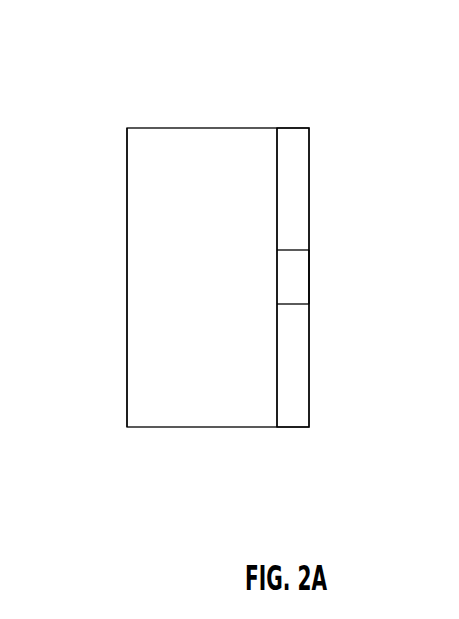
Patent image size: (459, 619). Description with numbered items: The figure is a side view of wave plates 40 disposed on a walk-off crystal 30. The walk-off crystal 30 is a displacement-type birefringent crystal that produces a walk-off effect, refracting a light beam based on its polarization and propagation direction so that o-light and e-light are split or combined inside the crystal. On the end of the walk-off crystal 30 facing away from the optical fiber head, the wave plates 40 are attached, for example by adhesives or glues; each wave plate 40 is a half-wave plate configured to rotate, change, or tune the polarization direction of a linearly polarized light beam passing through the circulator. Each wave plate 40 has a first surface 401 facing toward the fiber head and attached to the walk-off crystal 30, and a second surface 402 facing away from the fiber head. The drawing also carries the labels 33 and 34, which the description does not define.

The walk-off crystal 30 is at (193, 137).
The display area 33 is at (122, 178).
The boundary line 34 is at (277, 184).
The wave plates 40 is at (310, 128).
The first surface 401 is at (264, 339).
The second surface 402 is at (310, 344).